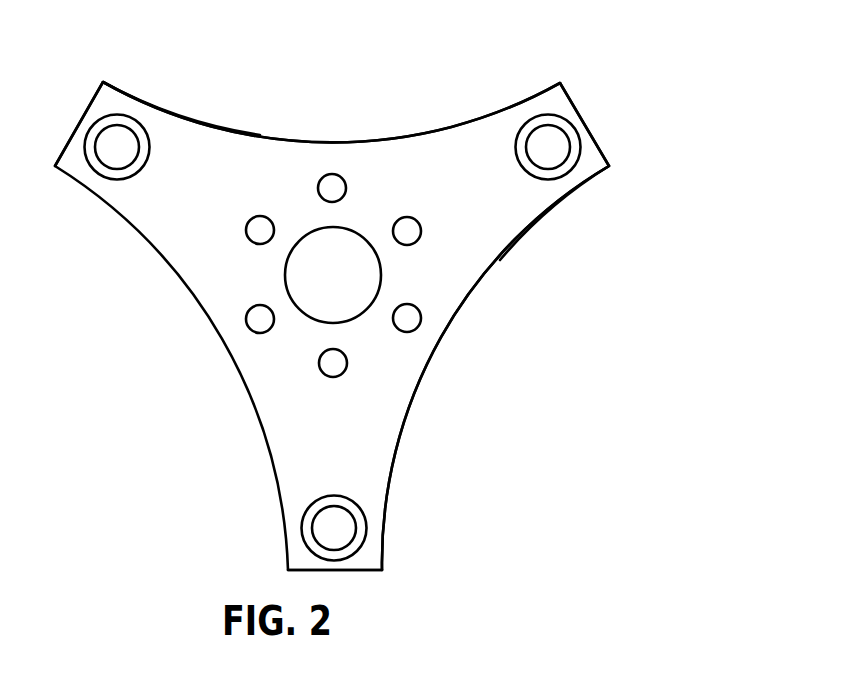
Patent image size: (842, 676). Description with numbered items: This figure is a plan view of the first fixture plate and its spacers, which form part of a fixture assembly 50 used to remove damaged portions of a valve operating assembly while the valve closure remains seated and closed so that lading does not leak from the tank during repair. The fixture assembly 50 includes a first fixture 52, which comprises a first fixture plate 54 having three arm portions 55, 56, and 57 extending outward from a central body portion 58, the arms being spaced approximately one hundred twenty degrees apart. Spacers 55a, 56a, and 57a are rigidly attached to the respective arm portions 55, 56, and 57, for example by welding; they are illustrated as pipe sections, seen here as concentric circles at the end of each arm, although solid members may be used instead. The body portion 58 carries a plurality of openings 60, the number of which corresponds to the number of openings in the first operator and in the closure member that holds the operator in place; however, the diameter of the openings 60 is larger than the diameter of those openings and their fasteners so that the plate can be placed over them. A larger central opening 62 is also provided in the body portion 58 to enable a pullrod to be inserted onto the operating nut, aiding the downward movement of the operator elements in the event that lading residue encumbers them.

The fixture assembly 50 is at (622, 132).
The first fixture 52 is at (470, 335).
The first fixture plate 54 is at (407, 145).
The arm portion 55 is at (544, 206).
The spacer 55a is at (538, 122).
The arm portion 56 is at (382, 467).
The spacer 56a is at (360, 526).
The arm portion 57 is at (201, 131).
The spacer 57a is at (125, 118).
The body portion 58 is at (463, 268).
The openings 60 is at (348, 366).
The opening 62 is at (355, 227).